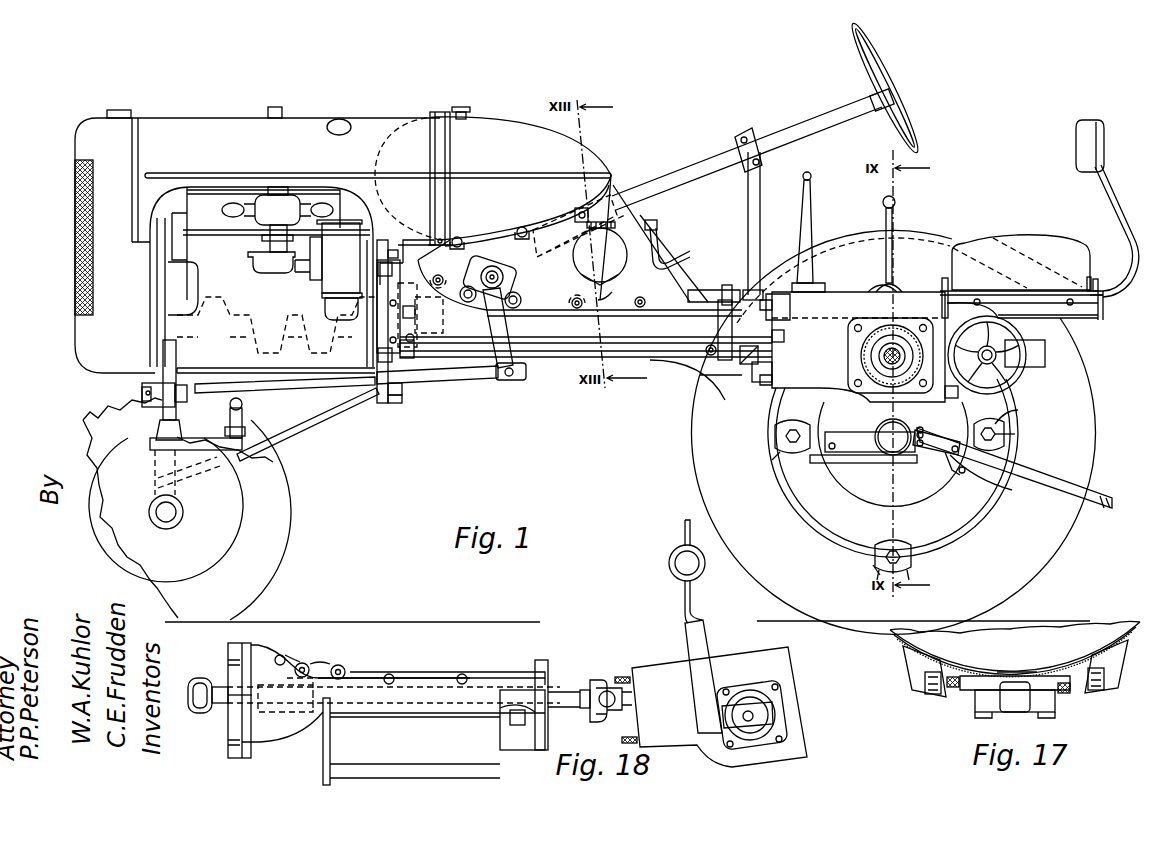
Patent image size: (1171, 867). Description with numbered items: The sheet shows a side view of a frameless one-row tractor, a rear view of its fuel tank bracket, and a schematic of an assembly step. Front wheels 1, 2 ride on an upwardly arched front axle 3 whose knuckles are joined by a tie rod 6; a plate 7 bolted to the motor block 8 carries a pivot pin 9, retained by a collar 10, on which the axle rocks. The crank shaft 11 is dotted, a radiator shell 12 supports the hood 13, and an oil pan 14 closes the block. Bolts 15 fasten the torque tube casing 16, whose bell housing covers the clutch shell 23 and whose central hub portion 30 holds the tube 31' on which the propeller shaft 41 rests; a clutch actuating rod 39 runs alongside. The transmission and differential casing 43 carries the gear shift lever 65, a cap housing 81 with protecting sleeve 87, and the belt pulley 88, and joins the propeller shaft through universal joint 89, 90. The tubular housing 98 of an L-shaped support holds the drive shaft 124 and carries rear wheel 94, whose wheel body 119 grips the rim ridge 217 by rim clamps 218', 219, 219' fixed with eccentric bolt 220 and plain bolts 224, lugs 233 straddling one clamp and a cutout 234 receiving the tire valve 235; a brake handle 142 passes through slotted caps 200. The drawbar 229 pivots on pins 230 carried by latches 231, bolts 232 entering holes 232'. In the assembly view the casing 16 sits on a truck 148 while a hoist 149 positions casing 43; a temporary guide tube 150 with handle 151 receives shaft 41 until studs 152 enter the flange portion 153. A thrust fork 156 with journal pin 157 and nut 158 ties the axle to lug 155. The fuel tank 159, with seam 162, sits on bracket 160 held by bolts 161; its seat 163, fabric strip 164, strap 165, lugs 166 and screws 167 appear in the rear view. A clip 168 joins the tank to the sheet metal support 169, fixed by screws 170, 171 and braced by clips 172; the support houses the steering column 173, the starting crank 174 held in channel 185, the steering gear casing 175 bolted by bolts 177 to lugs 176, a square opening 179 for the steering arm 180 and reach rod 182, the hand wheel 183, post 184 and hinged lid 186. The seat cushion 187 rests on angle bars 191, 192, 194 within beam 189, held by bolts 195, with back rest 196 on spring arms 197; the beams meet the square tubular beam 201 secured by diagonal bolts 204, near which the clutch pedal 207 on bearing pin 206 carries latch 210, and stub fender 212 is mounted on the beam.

In FIG. 1, the front wheel 1 is at (282, 510).
In FIG. 1, the front wheel 2 is at (115, 407).
In FIG. 1, the front axle 3 is at (163, 420).
In FIG. 1, the tie rod 6 is at (228, 418).
In FIG. 1, the plate 7 is at (176, 362).
In FIG. 1, the motor block 8 is at (196, 274).
In FIG. 1, the pivot pin 9 is at (185, 392).
In FIG. 1, the collar 10 is at (143, 392).
In FIG. 1, the crank shaft 11 is at (232, 312).
In FIG. 1, the radiator shell 12 is at (80, 133).
In FIG. 1, the hood 13 is at (190, 118).
In FIG. 1, the oil pan 14 is at (276, 395).
In FIG. 1, the bolts 15 is at (372, 268).
In FIG. 1, the torque tube casing 16 is at (636, 341).
In FIG. 18, the torque tube casing 16 is at (432, 675).
In FIG. 1, the shell 23 is at (410, 300).
In FIG. 18, the central hub portion 30 is at (302, 718).
In FIG. 18, the tube 31' is at (393, 702).
In FIG. 1, the clutch actuating rod 39 is at (584, 345).
In FIG. 1, the propeller shaft 41 is at (413, 340).
In FIG. 18, the propeller shaft 41 is at (577, 692).
In FIG. 1, the transmission and differential casing 43 is at (851, 297).
In FIG. 18, the transmission and differential casing 43 is at (741, 658).
In FIG. 1, the gear shift lever 65 is at (802, 225).
In FIG. 1, the cap housing 81 is at (958, 394).
In FIG. 1, the protecting sleeve 87 is at (1040, 358).
In FIG. 1, the belt pulley 88 is at (1020, 378).
In FIG. 18, the universal joint 89 is at (592, 708).
In FIG. 18, the universal joint 90 is at (613, 706).
In FIG. 1, the rear wheel 94 is at (1050, 545).
In FIG. 1, the tubular housing 98 is at (852, 347).
In FIG. 1, the wheel body 119 is at (830, 500).
In FIG. 1, the drive shaft 124 is at (878, 362).
In FIG. 1, the handle 142 is at (883, 212).
In FIG. 18, the truck 148 is at (331, 752).
In FIG. 18, the traveling hoist 149 is at (669, 572).
In FIG. 18, the temporary guide tube 150 is at (225, 707).
In FIG. 18, the handle 151 is at (200, 677).
In FIG. 1, the studs 152 is at (757, 383).
In FIG. 18, the studs 152 is at (620, 676).
In FIG. 1, the flange portion 153 is at (784, 336).
In FIG. 18, the flange portion 153 is at (542, 664).
In FIG. 1, the lug 155 is at (383, 404).
In FIG. 1, the thrust fork 156 is at (318, 425).
In FIG. 1, the journal pin 157 is at (402, 392).
In FIG. 1, the nut 158 is at (402, 402).
In FIG. 1, the fuel tank 159 is at (508, 120).
In FIG. 17, the fuel tank 159 is at (1125, 625).
In FIG. 1, the bracket 160 is at (406, 240).
In FIG. 17, the bracket 160 is at (1015, 718).
In FIG. 1, the bolts 161 is at (392, 248).
In FIG. 1, the horizontal seam 162 is at (612, 178).
In FIG. 17, the rearward portion 163 is at (970, 676).
In FIG. 17, the strip of fabric 164 is at (1040, 674).
In FIG. 1, the metal strap 165 is at (440, 118).
In FIG. 17, the metal strap 165 is at (900, 648).
In FIG. 17, the lugs 166 is at (950, 689).
In FIG. 17, the screws 167 is at (925, 686).
In FIG. 1, the sheet metal clip 168 is at (575, 210).
In FIG. 1, the sheet metal support 169 is at (700, 290).
In FIG. 1, the screws 170 is at (439, 276).
In FIG. 1, the screws 171 is at (458, 236).
In FIG. 1, the clips 172 is at (500, 232).
In FIG. 1, the steering column 173 is at (698, 165).
In FIG. 1, the starting crank 174 is at (672, 258).
In FIG. 1, the steering gear casing 175 is at (506, 268).
In FIG. 1, the lugs 176 is at (520, 298).
In FIG. 18, the lugs 176 is at (336, 665).
In FIG. 1, the bolts 177 is at (468, 303).
In FIG. 1, the square opening 179 is at (572, 273).
In FIG. 1, the steering arm 180 is at (515, 366).
In FIG. 1, the reach rod 182 is at (488, 380).
In FIG. 1, the hand wheel 183 is at (866, 35).
In FIG. 1, the post 184 is at (748, 195).
In FIG. 1, the channel 185 is at (625, 190).
In FIG. 1, the hinged lid 186 is at (624, 263).
In FIG. 1, the seat cushion 187 is at (1043, 238).
In FIG. 1, the angle iron beam 189 is at (1103, 308).
In FIG. 1, the transverse angle bar 191 is at (944, 289).
In FIG. 1, the transverse angle bar 192 is at (1086, 282).
In FIG. 1, the longitudinal angle bar 194 is at (1097, 282).
In FIG. 1, the bolts 195 is at (977, 299).
In FIG. 1, the back rest 196 is at (1076, 146).
In FIG. 1, the spring arms 197 is at (1104, 188).
In FIG. 1, the slotted caps 200 is at (876, 280).
In FIG. 1, the transverse tubular beam 201 is at (760, 356).
In FIG. 18, the transverse tubular beam 201 is at (502, 730).
In FIG. 1, the diagonal bolts 204 is at (708, 376).
In FIG. 1, the bearing pin 206 is at (706, 354).
In FIG. 1, the clutch pedal 207 is at (717, 285).
In FIG. 1, the latch 210 is at (716, 322).
In FIG. 1, the stub fender 212 is at (942, 234).
In FIG. 1, the ridge portion 217 is at (853, 490).
In FIG. 1, the rim clamp 218' is at (1028, 410).
In FIG. 1, the rim clamp 219 is at (912, 566).
In FIG. 1, the rim clamp 219' is at (760, 464).
In FIG. 1, the bolt 220 is at (1015, 434).
In FIG. 1, the bolt 224 is at (786, 436).
In FIG. 1, the drawbar 229 is at (1060, 492).
In FIG. 1, the pivot pins 230 is at (962, 474).
In FIG. 1, the latch 231 is at (940, 455).
In FIG. 1, the bolt 232 is at (863, 449).
In FIG. 1, the holes 232' is at (936, 416).
In FIG. 1, the lugs 233 is at (868, 552).
In FIG. 1, the cutout 234 is at (998, 495).
In FIG. 1, the tire valve 235 is at (943, 480).